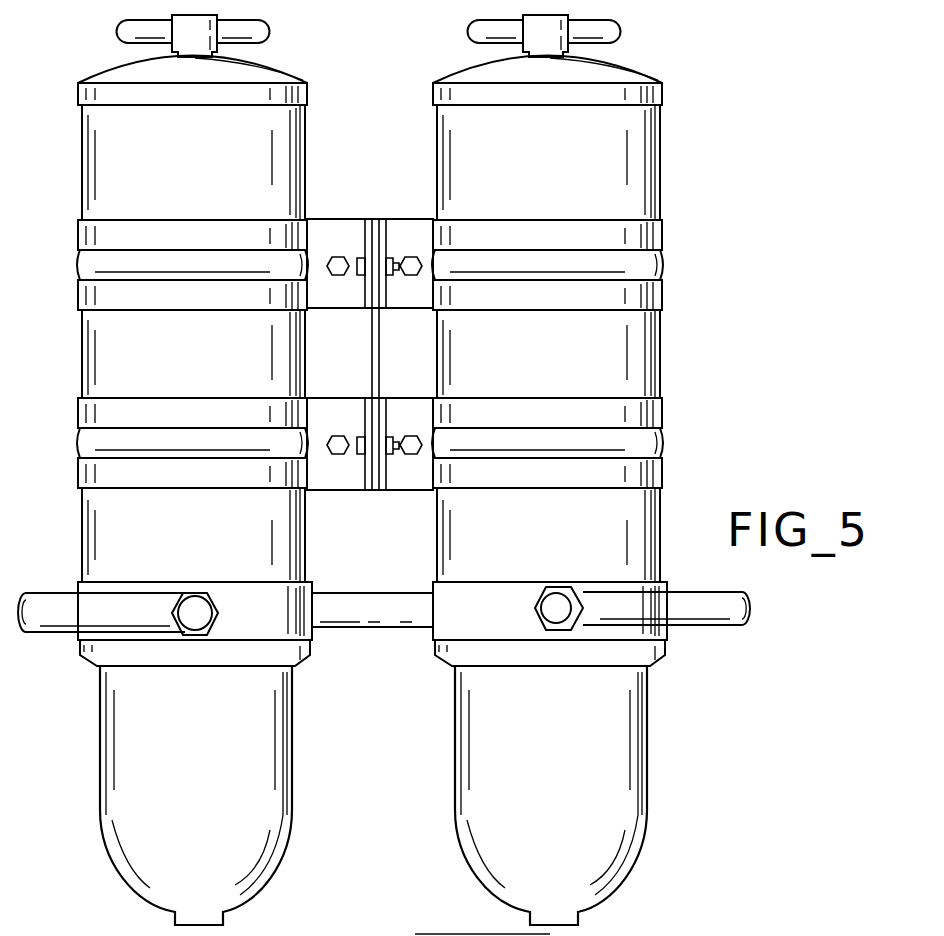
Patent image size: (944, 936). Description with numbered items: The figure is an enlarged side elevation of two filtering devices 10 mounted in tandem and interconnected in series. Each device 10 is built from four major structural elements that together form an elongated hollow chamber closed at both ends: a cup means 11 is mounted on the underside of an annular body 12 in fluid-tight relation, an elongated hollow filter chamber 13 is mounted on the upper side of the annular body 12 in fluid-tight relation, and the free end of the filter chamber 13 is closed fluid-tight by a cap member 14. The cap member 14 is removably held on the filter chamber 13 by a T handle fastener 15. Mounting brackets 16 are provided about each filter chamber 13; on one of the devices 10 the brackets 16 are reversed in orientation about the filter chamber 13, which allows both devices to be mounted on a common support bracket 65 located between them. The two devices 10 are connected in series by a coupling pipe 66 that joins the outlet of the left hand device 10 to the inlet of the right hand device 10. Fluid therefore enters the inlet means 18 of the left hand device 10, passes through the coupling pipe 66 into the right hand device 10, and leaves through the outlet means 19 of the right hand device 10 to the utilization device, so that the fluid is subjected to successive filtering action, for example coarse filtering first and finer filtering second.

The device 10 is at (424, 470).
The cup means 11 is at (425, 796).
The annular body 12 is at (730, 668).
The filter chamber 13 is at (740, 329).
The cap member 14 is at (700, 72).
The T handle fastener 15 is at (670, 32).
The mounting bracket 16 is at (385, 516).
The inlet means 18 is at (70, 605).
The outlet means 19 is at (552, 706).
The common support bracket 65 is at (355, 370).
The coupling pipe 66 is at (387, 617).